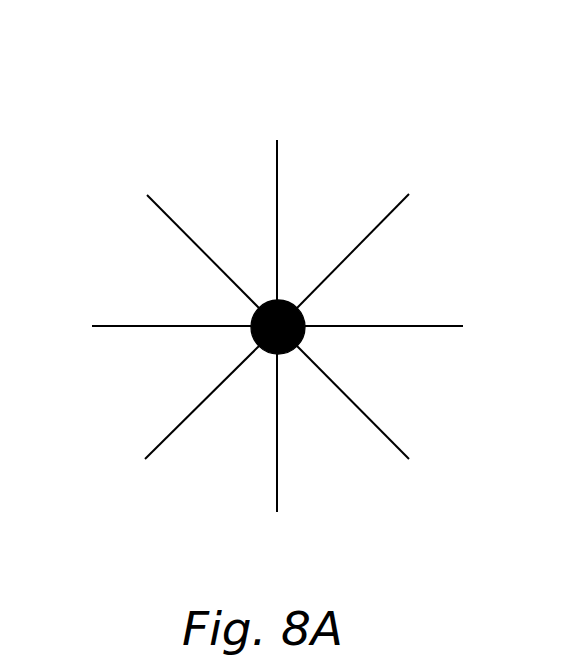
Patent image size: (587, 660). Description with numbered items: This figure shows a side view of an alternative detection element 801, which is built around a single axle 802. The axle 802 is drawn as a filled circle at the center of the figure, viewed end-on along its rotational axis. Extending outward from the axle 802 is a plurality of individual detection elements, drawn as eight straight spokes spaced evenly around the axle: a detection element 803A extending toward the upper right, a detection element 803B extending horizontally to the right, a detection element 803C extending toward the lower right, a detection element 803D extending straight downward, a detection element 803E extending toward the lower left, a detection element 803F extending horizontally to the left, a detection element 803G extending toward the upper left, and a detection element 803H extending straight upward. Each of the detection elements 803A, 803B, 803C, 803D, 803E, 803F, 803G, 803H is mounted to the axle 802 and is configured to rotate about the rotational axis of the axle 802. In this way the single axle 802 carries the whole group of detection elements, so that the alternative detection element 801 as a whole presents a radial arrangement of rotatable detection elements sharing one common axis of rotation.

The detection element 801 is at (451, 110).
The axle 802 is at (300, 317).
The detection element 803A is at (373, 232).
The detection element 803B is at (443, 326).
The detection element 803C is at (403, 450).
The detection element 803D is at (277, 507).
The detection element 803E is at (152, 451).
The detection element 803F is at (110, 326).
The detection element 803G is at (180, 232).
The detection element 803H is at (277, 170).